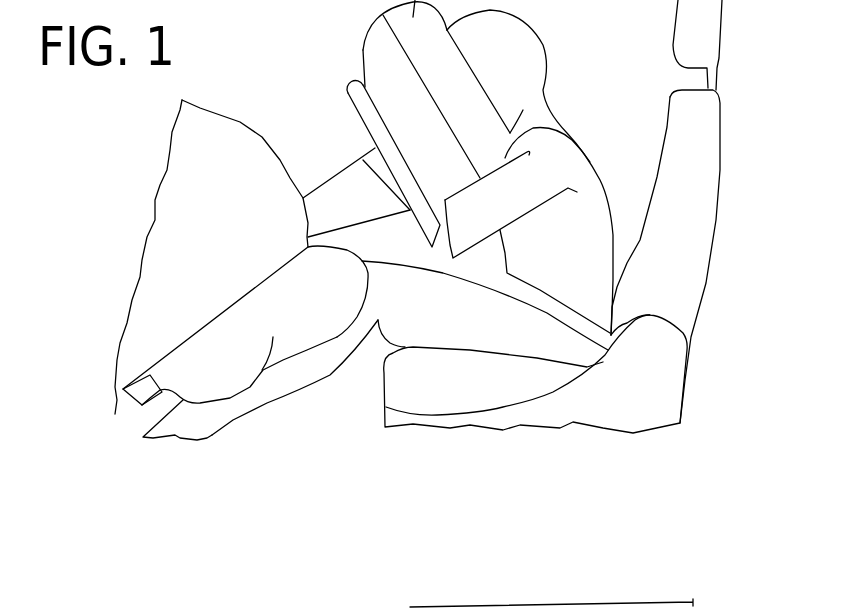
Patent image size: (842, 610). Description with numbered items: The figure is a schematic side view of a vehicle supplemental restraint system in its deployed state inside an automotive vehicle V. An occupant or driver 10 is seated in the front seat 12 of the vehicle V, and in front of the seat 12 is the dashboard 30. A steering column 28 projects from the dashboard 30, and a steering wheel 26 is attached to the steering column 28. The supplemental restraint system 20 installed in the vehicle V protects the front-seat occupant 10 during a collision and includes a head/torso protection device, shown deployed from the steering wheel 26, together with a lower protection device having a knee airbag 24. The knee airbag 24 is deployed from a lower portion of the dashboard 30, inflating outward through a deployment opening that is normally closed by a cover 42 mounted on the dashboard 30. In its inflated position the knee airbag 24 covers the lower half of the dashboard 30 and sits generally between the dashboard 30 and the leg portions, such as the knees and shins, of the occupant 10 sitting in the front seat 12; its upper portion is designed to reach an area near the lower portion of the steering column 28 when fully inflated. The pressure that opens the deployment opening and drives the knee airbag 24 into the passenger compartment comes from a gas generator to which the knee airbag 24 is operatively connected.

The occupant 10 is at (570, 240).
The front seat 12 is at (730, 320).
The supplemental restraint system 20 is at (295, 100).
The knee airbag 24 is at (327, 306).
The steering wheel 26 is at (370, 127).
The steering column 28 is at (347, 220).
The dashboard 30 is at (232, 226).
The cover 42 is at (142, 380).
The automotive vehicle V is at (343, 436).